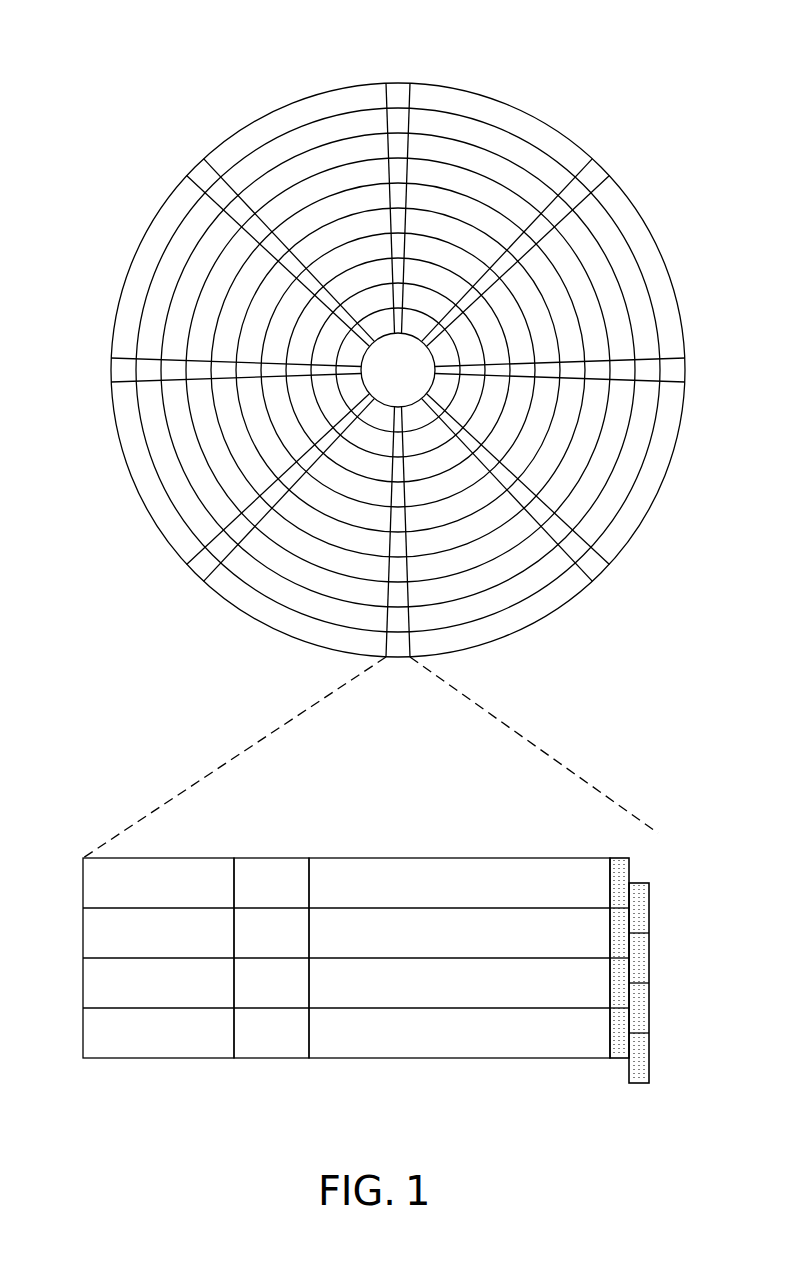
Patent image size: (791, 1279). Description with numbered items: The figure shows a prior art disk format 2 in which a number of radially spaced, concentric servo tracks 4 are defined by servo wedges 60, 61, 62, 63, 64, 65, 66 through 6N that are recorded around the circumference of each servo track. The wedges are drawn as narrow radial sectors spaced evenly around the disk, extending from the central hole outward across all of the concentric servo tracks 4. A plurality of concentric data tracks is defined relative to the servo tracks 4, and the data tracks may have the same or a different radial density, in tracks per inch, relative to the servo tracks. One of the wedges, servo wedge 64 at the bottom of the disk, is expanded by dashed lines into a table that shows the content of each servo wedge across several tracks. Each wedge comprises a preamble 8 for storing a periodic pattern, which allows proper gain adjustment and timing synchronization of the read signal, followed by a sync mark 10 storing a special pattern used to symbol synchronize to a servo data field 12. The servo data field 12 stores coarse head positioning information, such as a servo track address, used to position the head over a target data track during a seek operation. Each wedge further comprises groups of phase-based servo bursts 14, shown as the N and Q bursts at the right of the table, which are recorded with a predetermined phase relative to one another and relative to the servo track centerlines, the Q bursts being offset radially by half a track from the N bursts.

The disk format 2 is at (134, 55).
The servo track 4 is at (488, 130).
The servo wedge 60 is at (398, 94).
The servo wedge 61 is at (592, 173).
The servo wedge 62 is at (672, 372).
The servo wedge 63 is at (596, 568).
The servo wedge 64 is at (233, 747).
The servo wedge 65 is at (203, 567).
The servo wedge 66 is at (120, 372).
The servo wedge 6N is at (205, 175).
The preamble 8 is at (205, 857).
The sync mark 10 is at (270, 857).
The servo data field 12 is at (450, 857).
The servo bursts 14 is at (646, 853).